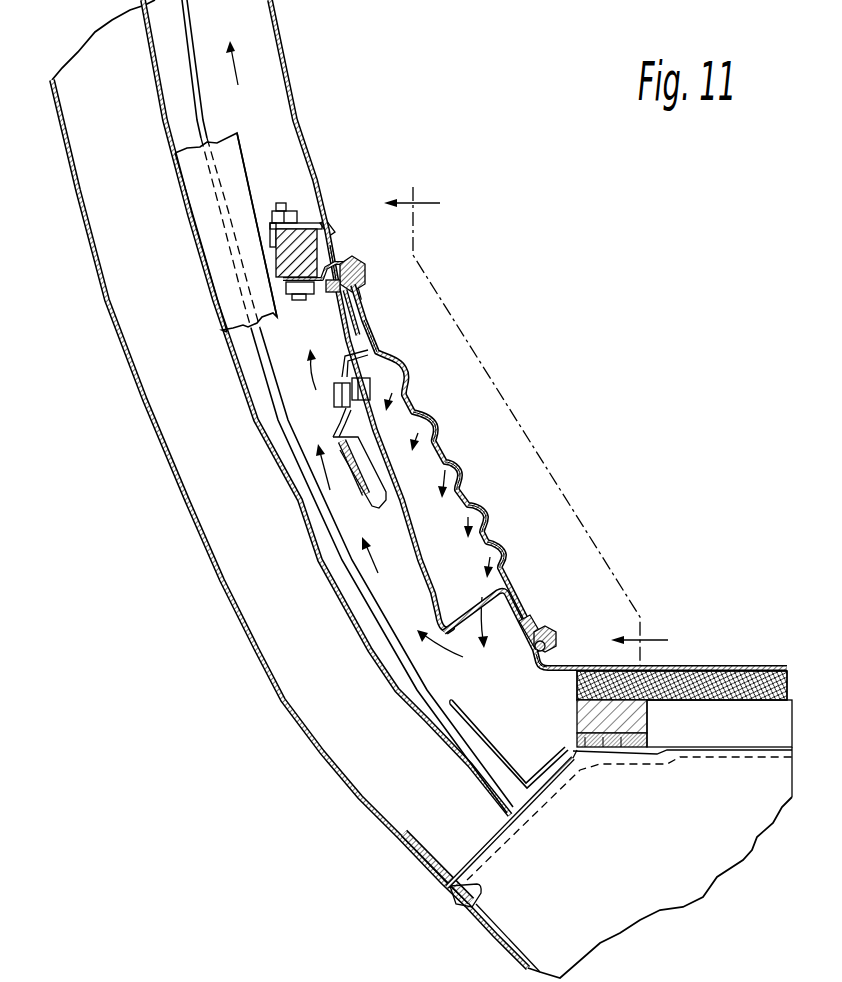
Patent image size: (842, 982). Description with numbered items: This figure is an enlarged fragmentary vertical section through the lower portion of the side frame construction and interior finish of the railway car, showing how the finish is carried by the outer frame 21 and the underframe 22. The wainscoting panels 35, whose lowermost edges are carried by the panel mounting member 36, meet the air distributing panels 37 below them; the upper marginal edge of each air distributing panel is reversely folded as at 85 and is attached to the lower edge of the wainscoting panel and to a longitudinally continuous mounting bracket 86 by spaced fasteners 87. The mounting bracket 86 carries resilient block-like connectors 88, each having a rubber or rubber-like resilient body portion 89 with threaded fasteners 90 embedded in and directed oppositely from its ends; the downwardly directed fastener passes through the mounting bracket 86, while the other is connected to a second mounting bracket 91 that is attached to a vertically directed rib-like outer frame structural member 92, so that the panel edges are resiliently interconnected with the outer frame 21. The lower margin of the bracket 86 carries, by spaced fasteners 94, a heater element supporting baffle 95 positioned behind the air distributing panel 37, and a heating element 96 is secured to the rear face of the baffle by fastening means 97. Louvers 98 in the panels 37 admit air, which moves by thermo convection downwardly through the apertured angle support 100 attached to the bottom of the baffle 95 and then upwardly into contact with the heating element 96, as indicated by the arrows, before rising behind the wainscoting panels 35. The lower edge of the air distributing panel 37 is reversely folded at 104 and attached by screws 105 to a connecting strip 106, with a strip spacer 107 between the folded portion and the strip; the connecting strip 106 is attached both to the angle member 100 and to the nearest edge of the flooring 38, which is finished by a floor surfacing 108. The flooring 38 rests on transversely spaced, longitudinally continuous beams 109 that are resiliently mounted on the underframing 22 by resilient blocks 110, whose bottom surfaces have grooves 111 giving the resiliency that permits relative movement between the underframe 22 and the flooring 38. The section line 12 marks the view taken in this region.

The air flow direction arrows 12 is at (542, 426).
The outer frame 21 is at (84, 230).
The underframe 22 is at (741, 742).
The wainscoting panels 35 is at (281, 41).
The panel mounting member 36 is at (341, 230).
The air distributing panels 37 is at (381, 354).
The flooring 38 is at (744, 680).
The reversely folded upper marginal edge portion 85 is at (344, 266).
The mounting bracket 86 is at (347, 318).
The fasteners 87 is at (362, 277).
The resilient block-like connectors 88 is at (312, 226).
The resilient body portion 89 is at (275, 257).
The threaded fasteners 90 is at (279, 203).
The second mounting bracket 91 is at (249, 197).
The outer frame structural member 92 is at (227, 140).
The fasteners 94 is at (374, 338).
The heater element supporting baffle 95 is at (405, 498).
The heating element 96 is at (338, 438).
The fastening means 97 is at (362, 384).
The louvers 98 is at (440, 431).
The angle support 100 is at (503, 600).
The reversely folded lower marginal edge portion 104 is at (529, 620).
The screws 105 is at (548, 628).
The connecting strip 106 is at (558, 663).
The strip spacer 107 is at (536, 656).
The floor surfacing 108 is at (708, 664).
The beams 109 is at (587, 717).
The resilient blocks 110 is at (647, 738).
The grooves 111 is at (632, 741).